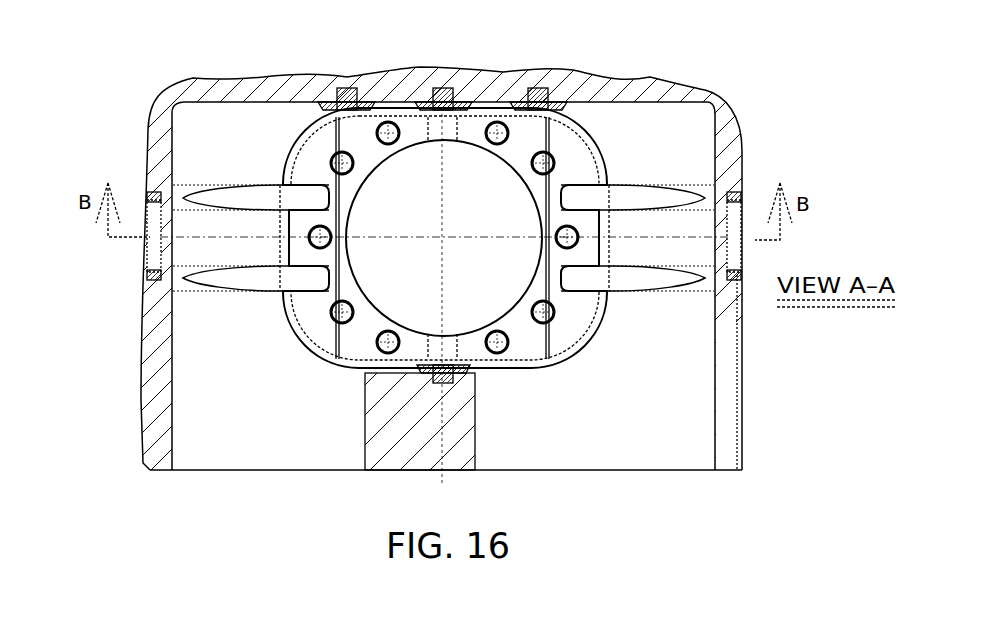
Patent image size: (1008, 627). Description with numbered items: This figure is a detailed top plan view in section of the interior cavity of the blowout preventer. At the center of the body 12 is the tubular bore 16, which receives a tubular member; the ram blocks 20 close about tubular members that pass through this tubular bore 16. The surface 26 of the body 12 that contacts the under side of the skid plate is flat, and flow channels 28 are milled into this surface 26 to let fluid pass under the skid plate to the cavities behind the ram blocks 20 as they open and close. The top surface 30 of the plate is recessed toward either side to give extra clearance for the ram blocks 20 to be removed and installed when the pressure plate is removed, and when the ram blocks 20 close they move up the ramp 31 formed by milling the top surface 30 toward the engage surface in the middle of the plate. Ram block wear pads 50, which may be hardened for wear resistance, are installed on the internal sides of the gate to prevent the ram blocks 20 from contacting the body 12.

The body 12 is at (141, 352).
The tubular bore 16 is at (462, 284).
The ram blocks 20 is at (567, 153).
The surface 26 is at (230, 378).
The flow channels 28 is at (178, 306).
The top surface 30 is at (563, 142).
The ramp 31 is at (333, 140).
The ram block wear pads 50 is at (532, 103).